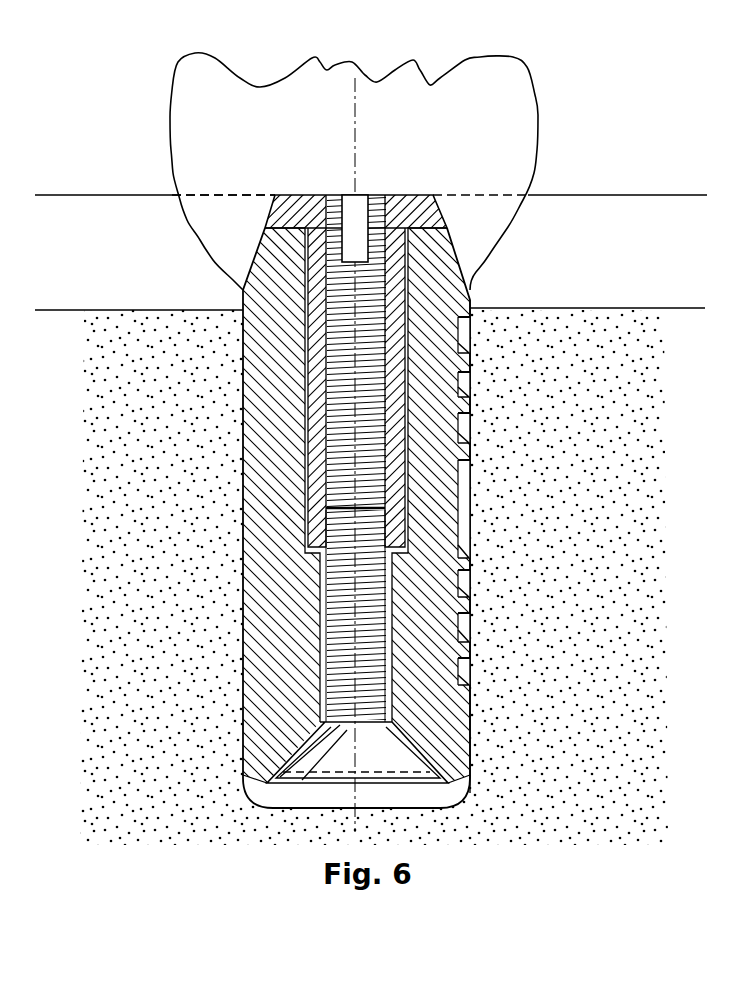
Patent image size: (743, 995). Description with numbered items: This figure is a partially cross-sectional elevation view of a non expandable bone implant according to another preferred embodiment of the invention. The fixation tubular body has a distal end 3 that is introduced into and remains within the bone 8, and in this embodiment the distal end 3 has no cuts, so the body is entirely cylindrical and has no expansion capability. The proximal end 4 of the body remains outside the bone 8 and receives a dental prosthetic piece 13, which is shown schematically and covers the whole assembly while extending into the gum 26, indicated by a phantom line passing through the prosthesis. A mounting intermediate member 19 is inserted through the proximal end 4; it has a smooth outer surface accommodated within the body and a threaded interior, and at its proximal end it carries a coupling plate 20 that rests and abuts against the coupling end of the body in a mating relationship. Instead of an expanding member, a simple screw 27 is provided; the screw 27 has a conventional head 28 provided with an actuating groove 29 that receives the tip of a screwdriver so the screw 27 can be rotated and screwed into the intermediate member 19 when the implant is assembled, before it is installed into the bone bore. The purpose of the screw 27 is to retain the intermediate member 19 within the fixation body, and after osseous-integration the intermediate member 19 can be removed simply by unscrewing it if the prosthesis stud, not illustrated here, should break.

The distal end 3 is at (497, 722).
The proximal end 4 is at (537, 259).
The bone 8 is at (567, 548).
The dental prosthetic piece 13 is at (538, 108).
The mounting intermediate member 19 is at (313, 340).
The coupling plate 20 is at (446, 214).
The gum 26 is at (682, 264).
The screw 27 is at (350, 655).
The head 28 is at (399, 764).
The actuating groove 29 is at (322, 770).